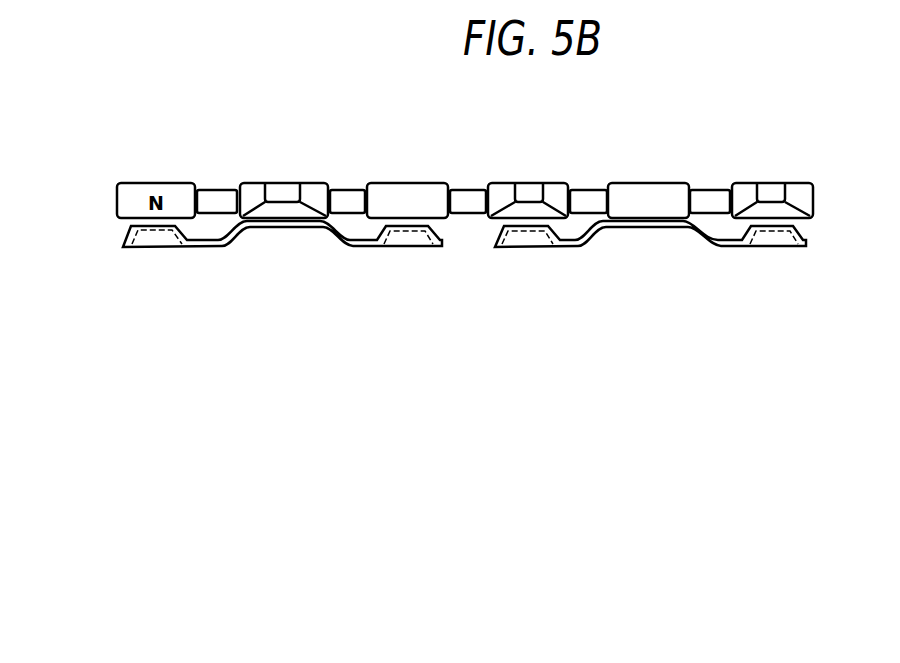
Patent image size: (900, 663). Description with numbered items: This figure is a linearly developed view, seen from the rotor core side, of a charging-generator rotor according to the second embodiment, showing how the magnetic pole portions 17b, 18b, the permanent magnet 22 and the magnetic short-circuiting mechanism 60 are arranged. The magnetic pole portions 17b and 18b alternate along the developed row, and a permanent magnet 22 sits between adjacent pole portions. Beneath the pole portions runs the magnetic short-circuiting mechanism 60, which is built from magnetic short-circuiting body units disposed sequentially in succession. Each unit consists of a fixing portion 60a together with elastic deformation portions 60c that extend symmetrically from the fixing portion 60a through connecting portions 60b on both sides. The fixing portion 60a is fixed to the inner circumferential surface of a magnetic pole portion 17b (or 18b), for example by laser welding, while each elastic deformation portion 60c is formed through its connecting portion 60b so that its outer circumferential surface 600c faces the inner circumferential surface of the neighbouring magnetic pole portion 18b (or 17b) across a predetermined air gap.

The permanent magnet 22 is at (220, 197).
The magnetic pole portion 18b is at (283, 189).
The magnetic pole portion 17b is at (402, 188).
The outer circumferential surface 600c is at (790, 213).
The magnetic short-circuiting mechanism 60 is at (498, 284).
The fixing portion 60a is at (647, 229).
The connecting portion 60b is at (583, 242).
The elastic deformation portion 60c is at (515, 229).